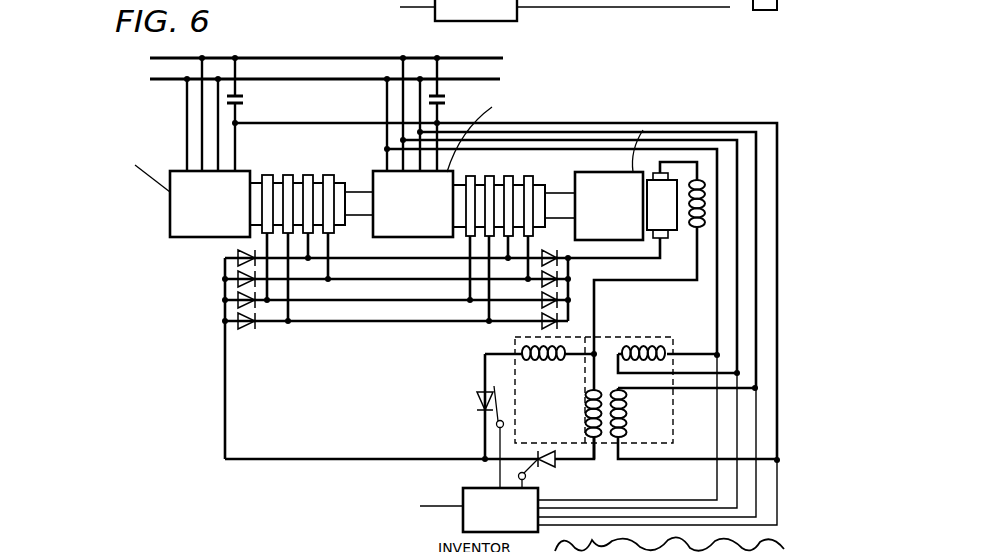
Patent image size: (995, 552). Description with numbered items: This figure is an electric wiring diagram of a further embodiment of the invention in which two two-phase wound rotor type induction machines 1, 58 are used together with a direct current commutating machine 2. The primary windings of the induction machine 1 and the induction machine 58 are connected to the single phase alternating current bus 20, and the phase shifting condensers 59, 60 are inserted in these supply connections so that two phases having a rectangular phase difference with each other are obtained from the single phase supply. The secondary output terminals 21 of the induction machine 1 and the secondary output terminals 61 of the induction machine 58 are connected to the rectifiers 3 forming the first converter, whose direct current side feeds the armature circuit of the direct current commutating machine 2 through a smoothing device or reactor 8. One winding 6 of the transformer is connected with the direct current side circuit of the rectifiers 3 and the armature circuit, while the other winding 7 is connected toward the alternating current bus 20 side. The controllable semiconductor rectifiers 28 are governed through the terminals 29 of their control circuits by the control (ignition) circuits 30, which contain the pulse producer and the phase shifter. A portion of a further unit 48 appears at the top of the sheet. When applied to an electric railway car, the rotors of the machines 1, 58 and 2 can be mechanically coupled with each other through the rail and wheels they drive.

The wound rotor type induction machine 1 is at (135, 146).
The direct current commutating machine 2 is at (697, 162).
The first converter 3 is at (441, 346).
The winding of transformer 6 is at (586, 393).
The other winding of transformer 7 is at (645, 395).
The smoothing device or reactor 8 is at (695, 226).
The alternating current bus 20 is at (500, 79).
The secondary output terminals 21 is at (286, 174).
The semiconductor rectifiers 28 is at (478, 398).
The terminals of control circuits 29 is at (496, 406).
The control (ignition) circuits 30 is at (336, 495).
The control unit 48 is at (751, 3).
The wound rotor type induction machine 58 is at (505, 146).
The phase shifting condenser 59 is at (245, 101).
The phase shifting condenser 60 is at (447, 101).
The secondary output terminals 61 is at (488, 178).